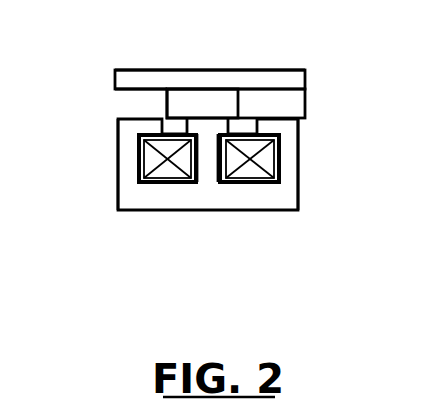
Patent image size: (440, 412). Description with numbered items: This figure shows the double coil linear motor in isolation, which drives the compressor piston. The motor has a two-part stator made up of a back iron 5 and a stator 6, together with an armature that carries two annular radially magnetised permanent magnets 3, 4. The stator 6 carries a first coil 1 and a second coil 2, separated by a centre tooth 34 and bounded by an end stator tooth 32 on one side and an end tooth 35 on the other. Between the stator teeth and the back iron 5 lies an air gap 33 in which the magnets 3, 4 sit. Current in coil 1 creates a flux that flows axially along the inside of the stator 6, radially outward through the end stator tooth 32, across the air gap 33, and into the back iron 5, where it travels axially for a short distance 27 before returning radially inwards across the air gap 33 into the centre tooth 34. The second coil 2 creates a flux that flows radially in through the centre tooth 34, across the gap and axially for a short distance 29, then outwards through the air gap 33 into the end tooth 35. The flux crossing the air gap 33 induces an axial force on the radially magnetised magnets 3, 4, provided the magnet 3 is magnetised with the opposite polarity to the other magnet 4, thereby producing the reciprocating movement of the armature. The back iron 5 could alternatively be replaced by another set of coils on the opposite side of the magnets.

The coil 1 is at (162, 185).
The second coil 2 is at (258, 182).
The permanent magnet 3 is at (205, 98).
The permanent magnet 4 is at (306, 103).
The back iron 5 is at (306, 78).
The stator 6 is at (299, 173).
The short distance 27 is at (140, 70).
The short distance 29 is at (268, 78).
The end stator tooth 32 is at (125, 172).
The air gap 33 is at (137, 104).
The centre tooth 34 is at (208, 146).
The end tooth 35 is at (288, 147).